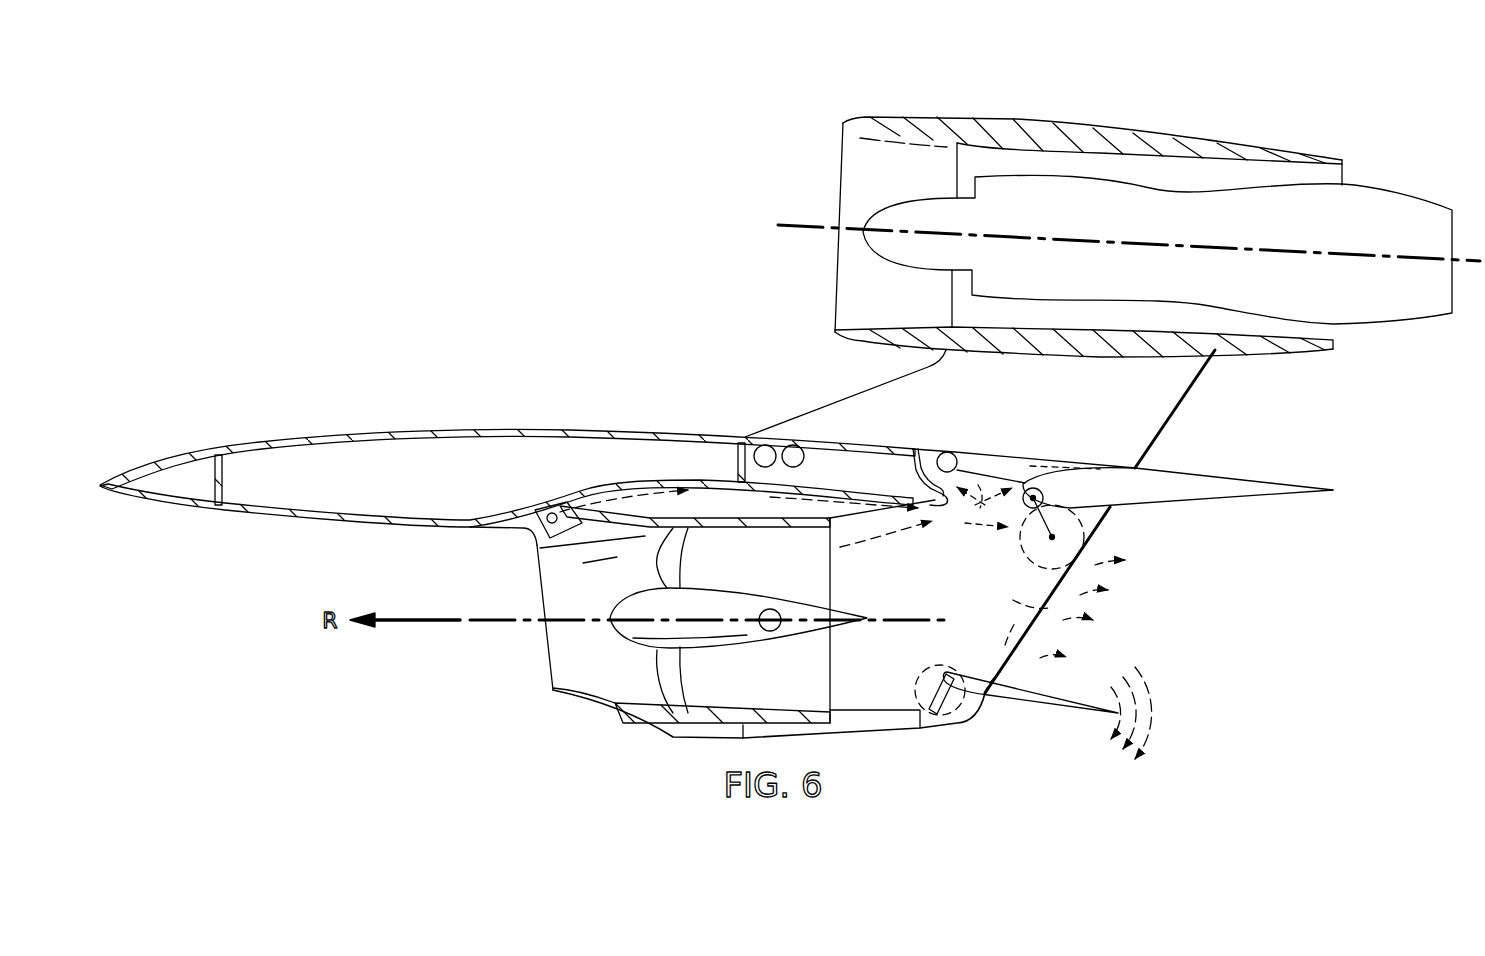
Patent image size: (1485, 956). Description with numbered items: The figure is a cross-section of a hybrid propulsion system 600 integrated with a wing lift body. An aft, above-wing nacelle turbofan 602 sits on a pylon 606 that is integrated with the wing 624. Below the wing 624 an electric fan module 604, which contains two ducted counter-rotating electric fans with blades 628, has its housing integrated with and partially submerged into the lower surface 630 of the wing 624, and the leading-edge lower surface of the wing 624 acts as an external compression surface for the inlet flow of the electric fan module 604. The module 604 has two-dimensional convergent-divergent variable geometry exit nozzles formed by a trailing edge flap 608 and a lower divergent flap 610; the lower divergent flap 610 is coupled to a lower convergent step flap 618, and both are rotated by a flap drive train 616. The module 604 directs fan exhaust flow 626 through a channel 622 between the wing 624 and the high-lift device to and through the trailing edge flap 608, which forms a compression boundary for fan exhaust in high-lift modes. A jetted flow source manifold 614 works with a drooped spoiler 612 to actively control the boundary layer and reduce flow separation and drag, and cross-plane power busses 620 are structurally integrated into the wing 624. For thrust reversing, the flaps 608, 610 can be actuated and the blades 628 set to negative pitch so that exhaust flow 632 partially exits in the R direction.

The hybrid propulsion system 600 is at (490, 133).
The turbofan 602 is at (838, 166).
The electric fan module 604 is at (545, 643).
The pylon 606 is at (1193, 388).
The trailing edge flap 608 is at (1175, 505).
The lower divergent flap 610 is at (1047, 703).
The drooped spoiler 612 is at (1008, 450).
The jetted flow source manifold 614 is at (943, 510).
The flap drive train 616 is at (940, 668).
The lower convergent step flap 618 is at (930, 690).
The cross-plane power busses 620 is at (735, 455).
The channel 622 is at (517, 533).
The wing 624 is at (232, 515).
The fan exhaust flow 626 is at (970, 530).
The blades 628 is at (680, 555).
The lower surface 630 is at (357, 535).
The exhaust flow 632 is at (1173, 720).